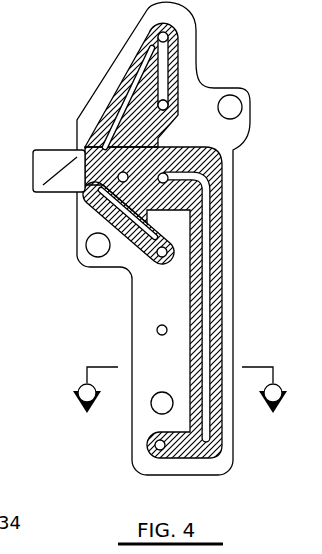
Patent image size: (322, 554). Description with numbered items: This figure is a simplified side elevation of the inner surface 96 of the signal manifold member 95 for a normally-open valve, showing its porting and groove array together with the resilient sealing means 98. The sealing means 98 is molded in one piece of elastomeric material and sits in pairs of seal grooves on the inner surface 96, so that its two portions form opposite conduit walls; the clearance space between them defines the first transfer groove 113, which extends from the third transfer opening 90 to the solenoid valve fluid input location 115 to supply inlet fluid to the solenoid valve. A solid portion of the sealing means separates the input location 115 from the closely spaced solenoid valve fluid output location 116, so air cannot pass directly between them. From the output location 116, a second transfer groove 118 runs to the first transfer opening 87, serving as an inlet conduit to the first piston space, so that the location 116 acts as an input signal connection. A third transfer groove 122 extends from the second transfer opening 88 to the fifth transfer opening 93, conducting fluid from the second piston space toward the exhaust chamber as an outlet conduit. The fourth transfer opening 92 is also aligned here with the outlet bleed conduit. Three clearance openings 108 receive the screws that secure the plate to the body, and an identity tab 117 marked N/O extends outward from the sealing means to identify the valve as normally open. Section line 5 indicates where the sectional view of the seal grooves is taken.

The signal manifold member 95 is at (207, 43).
The signal manifold resilient sealing means 98 is at (222, 247).
The fifth transfer opening 93 is at (147, 14).
The third transfer groove 122 is at (163, 66).
The second transfer opening 88 is at (176, 121).
The clearance openings 108 is at (232, 108).
The identity tab 117 is at (52, 150).
The solenoid valve fluid output location 116 is at (90, 198).
The second transfer groove 118 is at (118, 206).
The solenoid valve fluid input location 115 is at (221, 191).
The first transfer groove 113 is at (206, 311).
The first transfer opening 87 is at (162, 266).
The inner surface 96 is at (169, 303).
The fourth transfer opening 92 is at (160, 331).
The third transfer opening 90 is at (159, 449).
The section line 5- 5 is at (180, 390).